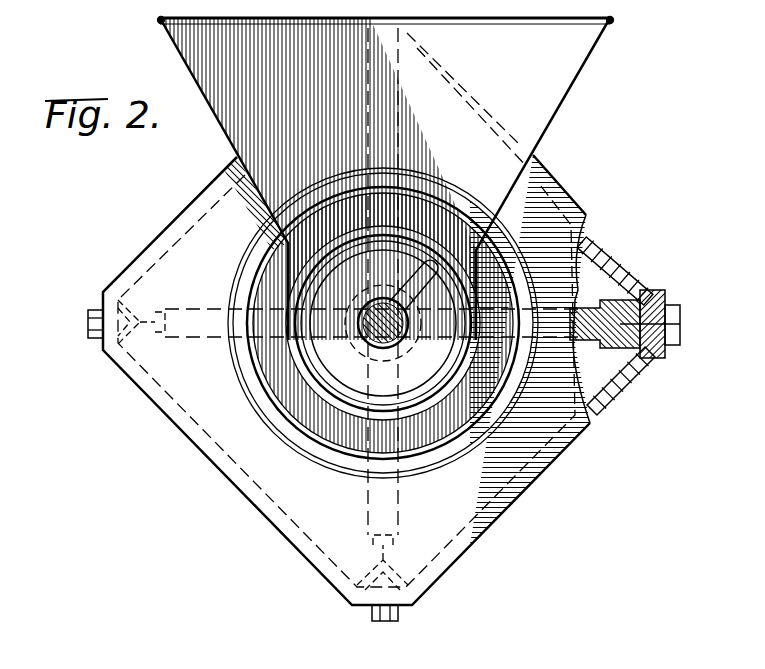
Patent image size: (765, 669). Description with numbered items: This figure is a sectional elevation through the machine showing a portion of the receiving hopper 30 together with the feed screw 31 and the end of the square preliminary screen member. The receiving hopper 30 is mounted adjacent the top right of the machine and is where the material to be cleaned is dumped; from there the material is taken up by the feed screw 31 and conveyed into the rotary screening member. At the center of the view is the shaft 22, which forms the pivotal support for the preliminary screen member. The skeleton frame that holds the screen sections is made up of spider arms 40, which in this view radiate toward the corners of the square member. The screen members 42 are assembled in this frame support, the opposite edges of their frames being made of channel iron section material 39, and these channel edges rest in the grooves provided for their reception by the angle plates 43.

The receiving hopper 30 is at (548, 72).
The feed screw 31 is at (338, 288).
The spider arms 40 is at (598, 290).
The shaft 22 is at (390, 302).
The screen members 42 is at (602, 253).
The channel iron section material 39 is at (652, 300).
The angle plates 43 is at (682, 315).